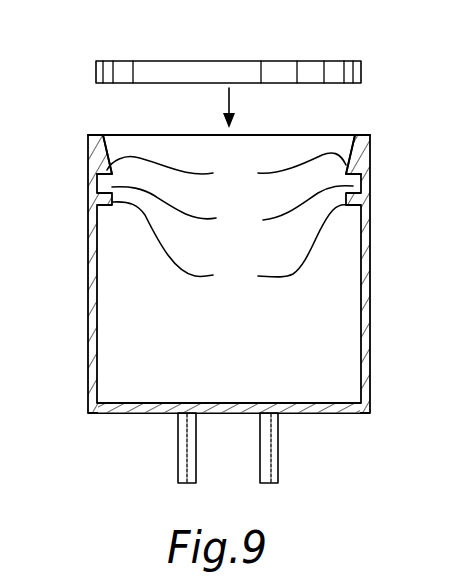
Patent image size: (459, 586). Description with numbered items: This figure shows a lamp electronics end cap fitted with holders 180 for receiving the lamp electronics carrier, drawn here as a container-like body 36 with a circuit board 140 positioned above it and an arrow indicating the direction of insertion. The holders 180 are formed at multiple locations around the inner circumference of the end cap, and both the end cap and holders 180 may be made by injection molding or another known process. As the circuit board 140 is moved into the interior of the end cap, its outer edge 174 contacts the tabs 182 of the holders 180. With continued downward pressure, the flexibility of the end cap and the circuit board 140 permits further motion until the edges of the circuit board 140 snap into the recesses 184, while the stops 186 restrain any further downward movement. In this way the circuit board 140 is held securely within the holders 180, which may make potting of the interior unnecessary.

The housing 36 is at (88, 350).
The circuit board 140 is at (215, 61).
The outer edge 174 is at (96, 70).
The holders 180 is at (70, 188).
The tabs 182 is at (226, 169).
The recesses 184 is at (232, 209).
The stops 186 is at (230, 245).